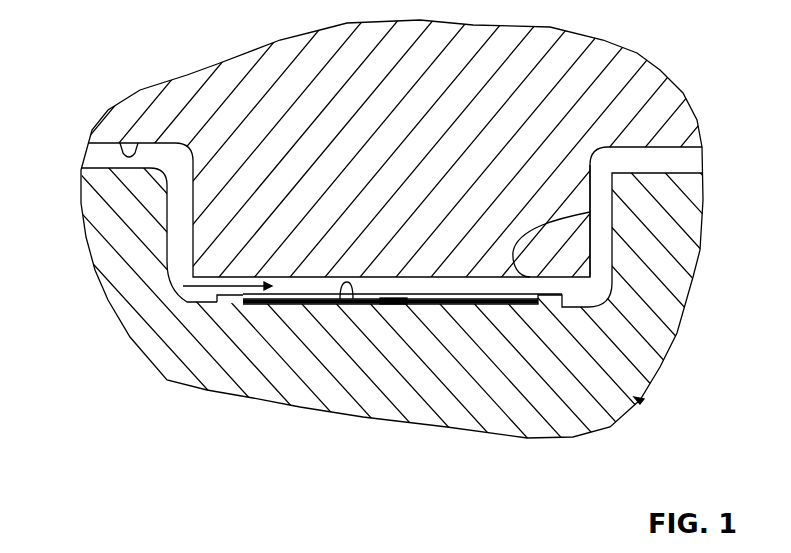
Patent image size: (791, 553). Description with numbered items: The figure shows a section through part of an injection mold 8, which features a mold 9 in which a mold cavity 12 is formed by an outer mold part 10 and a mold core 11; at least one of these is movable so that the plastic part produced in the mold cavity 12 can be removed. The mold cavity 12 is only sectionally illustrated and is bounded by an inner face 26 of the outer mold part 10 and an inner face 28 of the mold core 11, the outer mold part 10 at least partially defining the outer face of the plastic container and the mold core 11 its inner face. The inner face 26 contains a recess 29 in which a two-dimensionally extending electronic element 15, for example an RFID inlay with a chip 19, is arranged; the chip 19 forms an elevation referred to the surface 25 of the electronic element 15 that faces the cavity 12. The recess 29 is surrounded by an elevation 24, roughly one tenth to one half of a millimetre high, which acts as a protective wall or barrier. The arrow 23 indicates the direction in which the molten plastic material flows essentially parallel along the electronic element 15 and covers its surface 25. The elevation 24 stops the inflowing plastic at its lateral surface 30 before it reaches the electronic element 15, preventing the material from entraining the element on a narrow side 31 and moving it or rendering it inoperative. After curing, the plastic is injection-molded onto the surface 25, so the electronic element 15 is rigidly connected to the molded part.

The injection mold 8 is at (640, 404).
The mold 9 is at (677, 328).
The outer mold part 10 is at (592, 410).
The mold core 11 is at (668, 95).
The mold cavity 12 is at (600, 272).
The two-dimensionally extending electronic element 15 is at (273, 303).
The chip 19 is at (386, 304).
The arrow 23 is at (215, 295).
The elevation 24 is at (245, 299).
The surface 25 is at (344, 298).
The inner face 26 is at (185, 246).
The inner face 28 is at (133, 153).
The recess 29 is at (590, 212).
The lateral surface 30 is at (235, 297).
The narrow side 31 is at (257, 301).